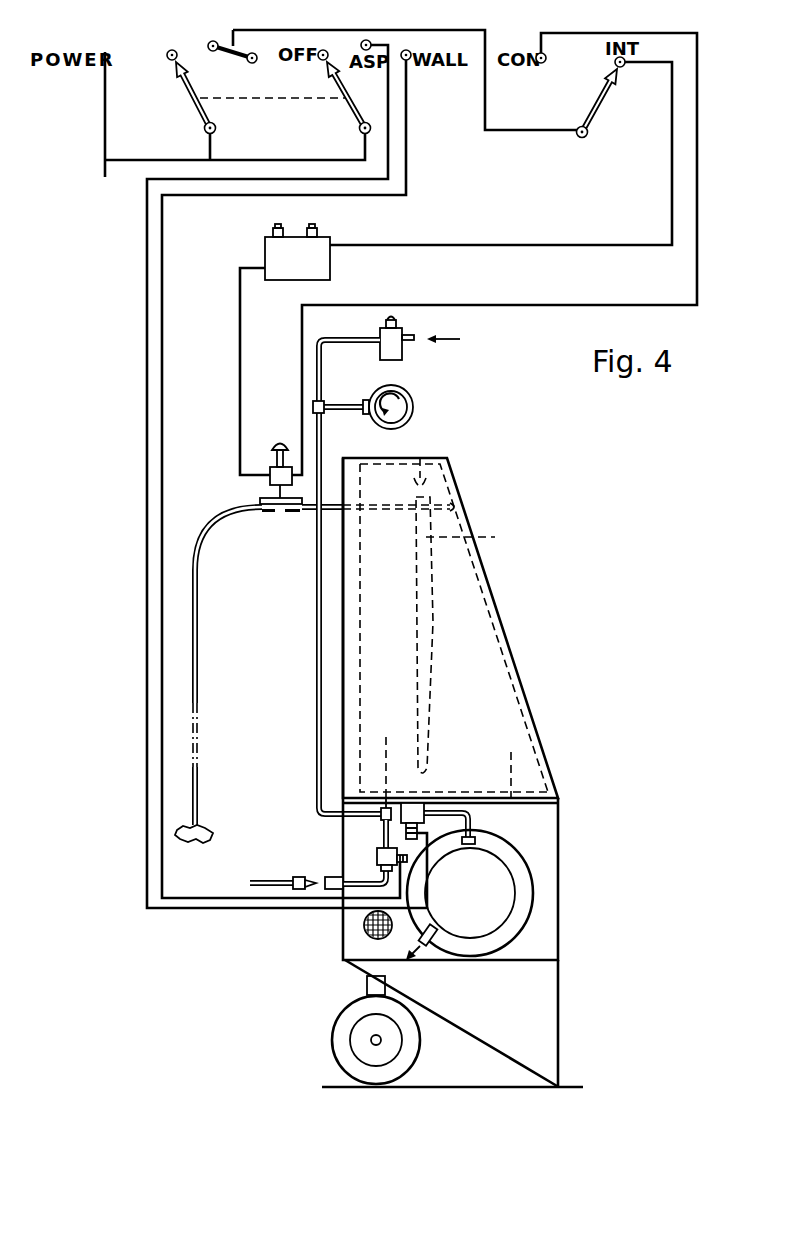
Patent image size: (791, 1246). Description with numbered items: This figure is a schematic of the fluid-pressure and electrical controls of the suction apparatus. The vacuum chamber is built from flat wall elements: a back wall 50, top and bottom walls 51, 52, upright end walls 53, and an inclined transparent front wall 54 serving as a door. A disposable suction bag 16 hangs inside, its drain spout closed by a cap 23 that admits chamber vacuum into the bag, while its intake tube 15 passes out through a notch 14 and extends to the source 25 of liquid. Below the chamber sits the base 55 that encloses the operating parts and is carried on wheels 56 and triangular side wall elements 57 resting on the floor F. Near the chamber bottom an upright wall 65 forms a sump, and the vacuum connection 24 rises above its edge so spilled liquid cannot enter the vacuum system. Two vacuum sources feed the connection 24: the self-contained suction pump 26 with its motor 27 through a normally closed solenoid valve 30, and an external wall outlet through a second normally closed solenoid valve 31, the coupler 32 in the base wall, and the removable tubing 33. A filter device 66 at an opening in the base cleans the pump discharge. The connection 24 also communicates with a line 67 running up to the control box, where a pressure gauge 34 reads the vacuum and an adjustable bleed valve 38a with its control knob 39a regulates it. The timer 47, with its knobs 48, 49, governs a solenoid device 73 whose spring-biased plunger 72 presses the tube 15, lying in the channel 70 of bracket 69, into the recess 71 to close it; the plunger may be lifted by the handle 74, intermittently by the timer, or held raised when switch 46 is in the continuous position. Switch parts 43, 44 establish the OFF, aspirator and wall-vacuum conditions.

The notch 14 is at (450, 508).
The intake tube 15 is at (199, 643).
The disposable suction bag 16 is at (436, 623).
The cap 23 is at (472, 538).
The vacuum connection 24 is at (390, 751).
The source of liquid 25 is at (240, 816).
The suction pump 26 is at (518, 901).
The vacuum pump 27 is at (531, 869).
The solenoid operated valve 30 is at (415, 803).
The solenoid operated valve 31 is at (378, 863).
The connector 32 is at (333, 878).
The plug-in vacuum connection 33 is at (273, 881).
The pressure gauge 34 is at (413, 407).
The adjustable bleed valve 38a is at (402, 352).
The adjustable control knob 39a is at (397, 323).
The switch part 43 is at (350, 113).
The switch part 44 is at (196, 113).
The switch 46 is at (600, 98).
The timer device 47 is at (266, 254).
The control knob 48 is at (274, 228).
The control knob 49 is at (318, 229).
The back wall 50 is at (362, 653).
The top wall 51 is at (422, 458).
The bottom wall 52 is at (530, 790).
The upright end wall 53 is at (490, 700).
The inclined front wall 54 is at (517, 661).
The base 55 is at (560, 826).
The wheels 56 is at (333, 1027).
The side wall elements 57 is at (540, 1024).
The upright wall 65 is at (516, 766).
The filter device 66 is at (355, 936).
The connection 67 is at (318, 695).
The bracket 69 is at (260, 500).
The channel 70 is at (266, 513).
The recess 71 is at (281, 514).
The plunger 72 is at (270, 478).
The solenoid device 73 is at (276, 452).
The handle 74 is at (284, 443).
The floor F is at (428, 1088).